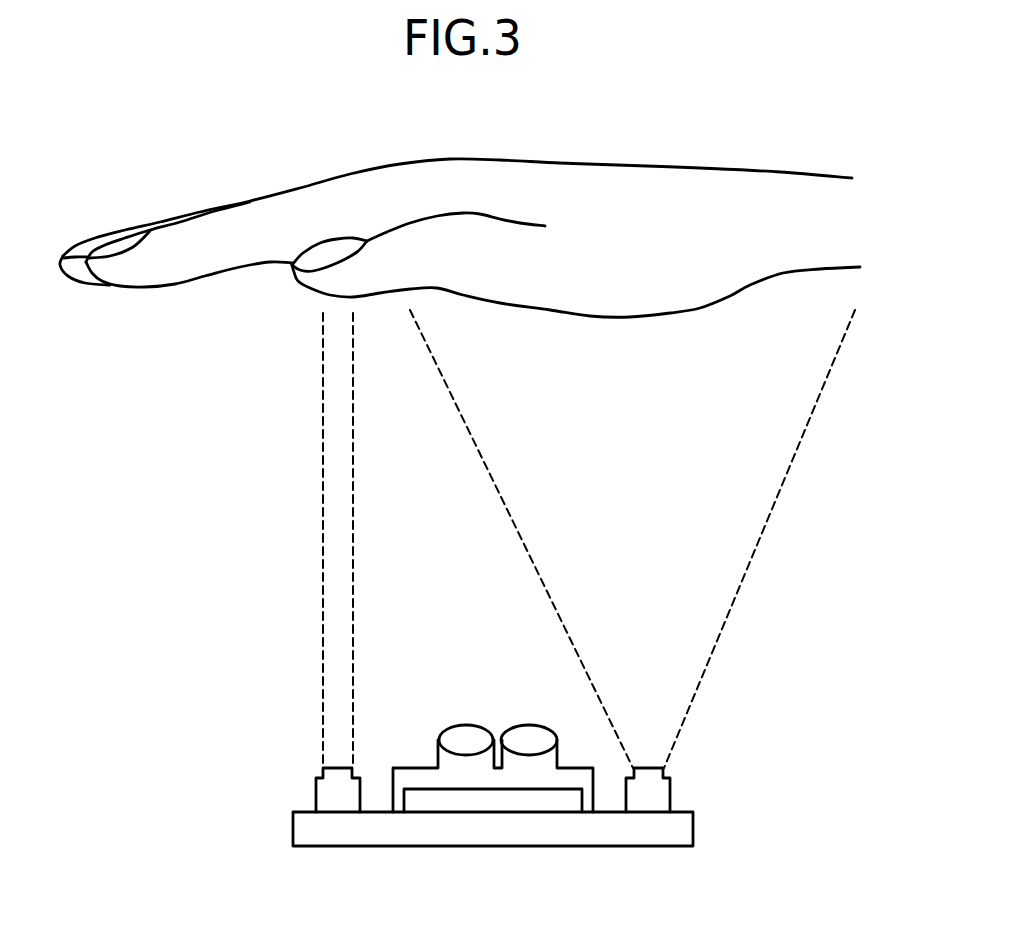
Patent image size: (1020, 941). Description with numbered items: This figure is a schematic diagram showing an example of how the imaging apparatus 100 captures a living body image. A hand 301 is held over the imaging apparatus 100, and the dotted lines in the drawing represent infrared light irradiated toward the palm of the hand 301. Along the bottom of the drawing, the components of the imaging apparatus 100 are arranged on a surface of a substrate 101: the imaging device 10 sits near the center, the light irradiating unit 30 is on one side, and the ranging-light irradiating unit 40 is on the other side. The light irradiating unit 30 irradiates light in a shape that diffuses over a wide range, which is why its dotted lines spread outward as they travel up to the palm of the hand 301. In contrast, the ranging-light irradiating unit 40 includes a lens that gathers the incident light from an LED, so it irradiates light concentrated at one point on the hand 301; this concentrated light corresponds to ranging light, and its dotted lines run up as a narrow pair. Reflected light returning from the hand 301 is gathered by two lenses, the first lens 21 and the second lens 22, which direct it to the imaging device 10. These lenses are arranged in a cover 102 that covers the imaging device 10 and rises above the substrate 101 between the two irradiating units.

The hand 301 is at (603, 164).
The imaging apparatus 100 is at (533, 785).
The substrate 101 is at (601, 847).
The cover 102 is at (405, 766).
The imaging device 10 is at (503, 803).
The first lens 21 is at (468, 726).
The second lens 22 is at (531, 726).
The light irradiating unit 30 is at (671, 785).
The ranging-light irradiating unit 40 is at (316, 784).